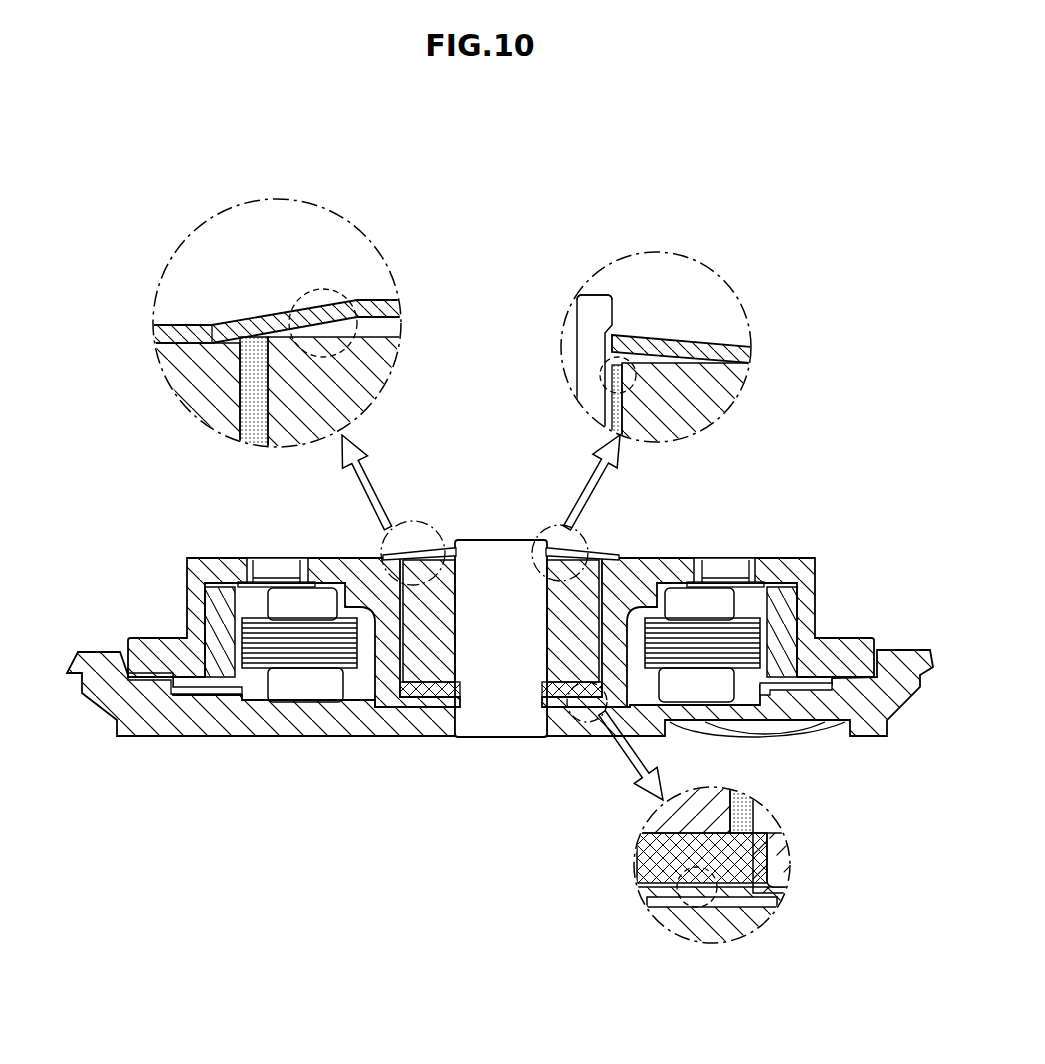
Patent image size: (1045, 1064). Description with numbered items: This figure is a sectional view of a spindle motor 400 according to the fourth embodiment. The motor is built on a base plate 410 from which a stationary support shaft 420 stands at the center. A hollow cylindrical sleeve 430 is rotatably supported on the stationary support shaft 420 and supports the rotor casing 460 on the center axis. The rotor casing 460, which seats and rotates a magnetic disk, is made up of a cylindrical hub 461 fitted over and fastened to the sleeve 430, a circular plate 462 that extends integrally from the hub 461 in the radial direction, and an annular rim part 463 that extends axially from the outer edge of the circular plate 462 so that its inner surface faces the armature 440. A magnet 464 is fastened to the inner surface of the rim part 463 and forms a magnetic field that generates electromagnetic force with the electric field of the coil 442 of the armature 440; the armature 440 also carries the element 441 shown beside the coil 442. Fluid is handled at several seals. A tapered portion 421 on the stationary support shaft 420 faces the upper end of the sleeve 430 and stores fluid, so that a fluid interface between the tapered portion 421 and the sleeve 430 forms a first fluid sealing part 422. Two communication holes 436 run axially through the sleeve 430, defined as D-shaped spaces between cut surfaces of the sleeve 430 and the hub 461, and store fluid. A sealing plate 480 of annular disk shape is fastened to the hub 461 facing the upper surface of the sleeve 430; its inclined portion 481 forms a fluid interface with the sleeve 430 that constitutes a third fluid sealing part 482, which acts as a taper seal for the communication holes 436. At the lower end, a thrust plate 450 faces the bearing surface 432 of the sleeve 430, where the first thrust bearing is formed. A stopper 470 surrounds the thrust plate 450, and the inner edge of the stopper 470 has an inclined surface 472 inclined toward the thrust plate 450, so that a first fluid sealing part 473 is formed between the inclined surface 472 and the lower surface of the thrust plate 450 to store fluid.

The spindle motor 400 is at (97, 125).
The base plate 410 is at (160, 757).
The stationary support shaft 420 is at (500, 724).
The tapered portion 421 is at (603, 340).
The first fluid sealing part 422 is at (601, 376).
The sleeve 430 is at (445, 592).
The bearing surface 432 is at (767, 830).
The communication holes 436 is at (385, 590).
The armature 440 is at (497, 721).
The coil 441 is at (258, 660).
The coil 442 is at (306, 690).
The thrust plate 450 is at (431, 714).
The rotor casing 460 is at (708, 575).
The hub 461 is at (639, 558).
The circular plate 462 is at (680, 558).
The rim part 463 is at (822, 558).
The magnet 464 is at (737, 540).
The stopper 470 is at (748, 911).
The inclined surface 472 is at (674, 892).
The first fluid sealing part 473 is at (703, 907).
The sealing plate 480 is at (380, 287).
The inclined portion 481 is at (277, 313).
The third fluid sealing part 482 is at (322, 298).